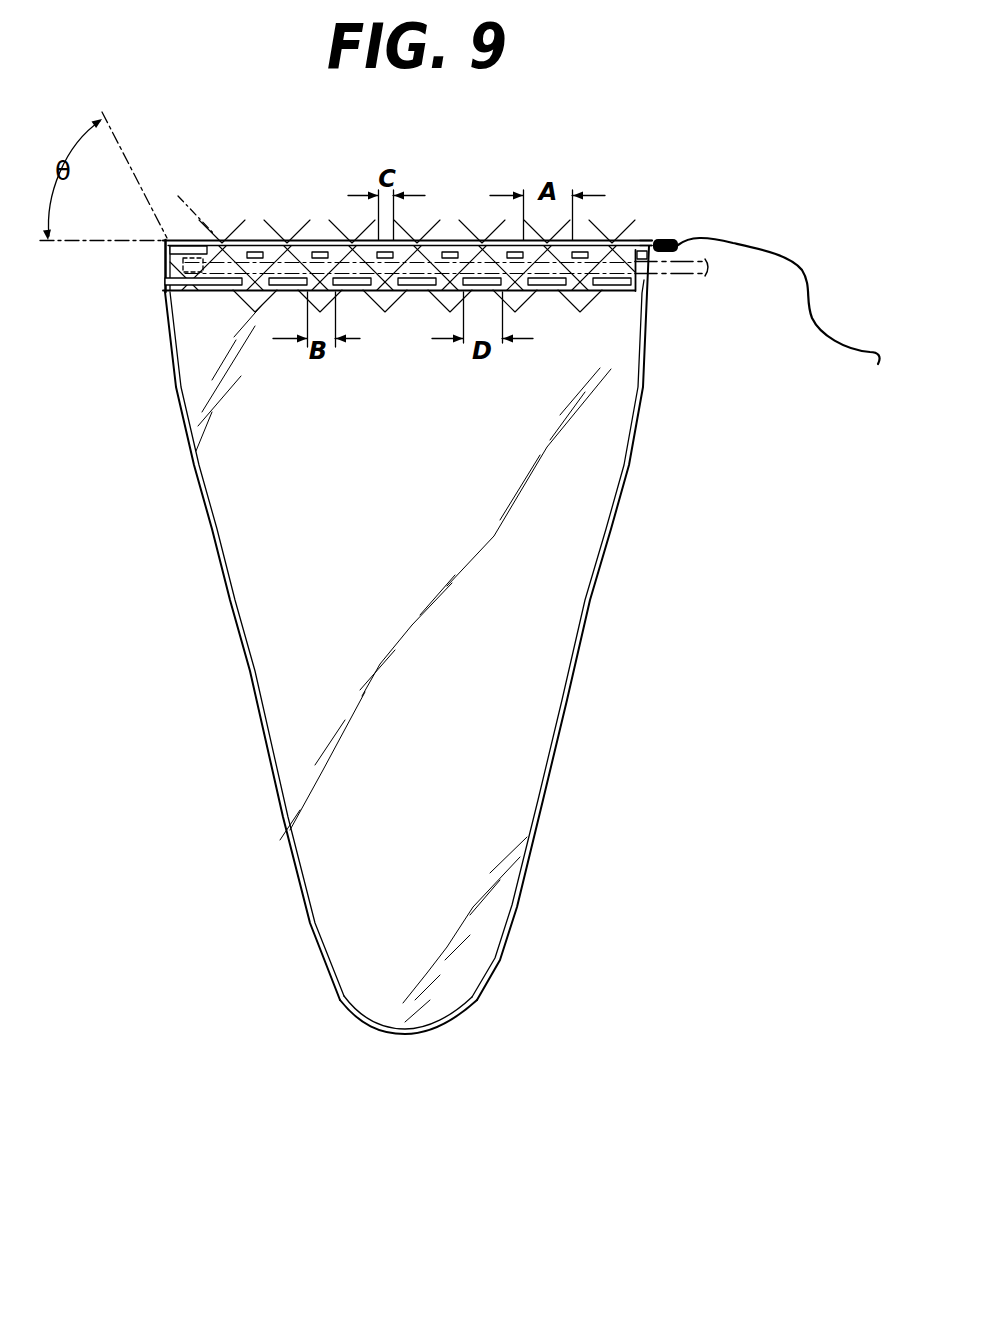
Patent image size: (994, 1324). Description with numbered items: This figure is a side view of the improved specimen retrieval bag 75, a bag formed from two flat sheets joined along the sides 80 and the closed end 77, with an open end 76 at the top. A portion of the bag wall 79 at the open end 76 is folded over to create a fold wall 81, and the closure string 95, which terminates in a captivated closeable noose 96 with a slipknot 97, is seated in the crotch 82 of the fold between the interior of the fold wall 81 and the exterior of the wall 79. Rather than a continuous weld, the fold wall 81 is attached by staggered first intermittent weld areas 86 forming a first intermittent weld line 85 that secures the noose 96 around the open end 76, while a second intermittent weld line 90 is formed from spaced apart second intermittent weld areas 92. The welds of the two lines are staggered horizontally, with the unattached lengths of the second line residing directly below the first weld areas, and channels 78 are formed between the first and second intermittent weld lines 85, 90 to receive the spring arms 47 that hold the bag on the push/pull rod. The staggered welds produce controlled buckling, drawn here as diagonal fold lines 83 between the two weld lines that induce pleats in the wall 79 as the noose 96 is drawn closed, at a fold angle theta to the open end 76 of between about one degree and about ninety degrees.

The spring arms 47 is at (697, 277).
The improved specimen retrieval bag 75 is at (155, 903).
The open end 76 is at (168, 240).
The closed end 77 is at (417, 1036).
The channels 78 is at (637, 262).
The bag wall 79 is at (527, 717).
The sides 80 is at (238, 630).
The fold wall 81 is at (197, 296).
The crotch 82 is at (165, 267).
The diagonal fold lines 83 is at (300, 226).
The first intermittent weld line 85 is at (451, 240).
The first intermittent weld areas 86 is at (320, 249).
The second intermittent weld line 90 is at (548, 300).
The second intermittent weld areas 92 is at (416, 287).
The closure string 95 is at (808, 280).
The noose 96 is at (644, 243).
The slipknot 97 is at (674, 238).